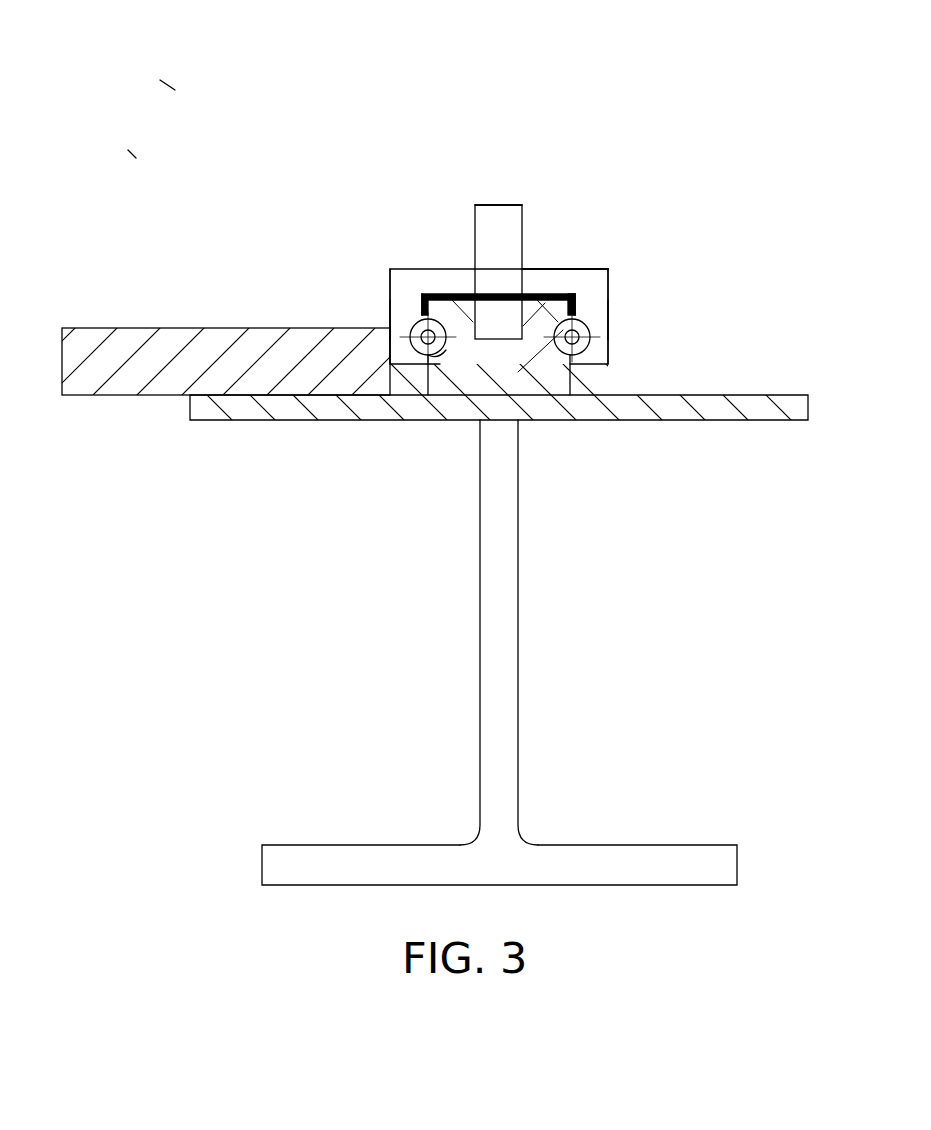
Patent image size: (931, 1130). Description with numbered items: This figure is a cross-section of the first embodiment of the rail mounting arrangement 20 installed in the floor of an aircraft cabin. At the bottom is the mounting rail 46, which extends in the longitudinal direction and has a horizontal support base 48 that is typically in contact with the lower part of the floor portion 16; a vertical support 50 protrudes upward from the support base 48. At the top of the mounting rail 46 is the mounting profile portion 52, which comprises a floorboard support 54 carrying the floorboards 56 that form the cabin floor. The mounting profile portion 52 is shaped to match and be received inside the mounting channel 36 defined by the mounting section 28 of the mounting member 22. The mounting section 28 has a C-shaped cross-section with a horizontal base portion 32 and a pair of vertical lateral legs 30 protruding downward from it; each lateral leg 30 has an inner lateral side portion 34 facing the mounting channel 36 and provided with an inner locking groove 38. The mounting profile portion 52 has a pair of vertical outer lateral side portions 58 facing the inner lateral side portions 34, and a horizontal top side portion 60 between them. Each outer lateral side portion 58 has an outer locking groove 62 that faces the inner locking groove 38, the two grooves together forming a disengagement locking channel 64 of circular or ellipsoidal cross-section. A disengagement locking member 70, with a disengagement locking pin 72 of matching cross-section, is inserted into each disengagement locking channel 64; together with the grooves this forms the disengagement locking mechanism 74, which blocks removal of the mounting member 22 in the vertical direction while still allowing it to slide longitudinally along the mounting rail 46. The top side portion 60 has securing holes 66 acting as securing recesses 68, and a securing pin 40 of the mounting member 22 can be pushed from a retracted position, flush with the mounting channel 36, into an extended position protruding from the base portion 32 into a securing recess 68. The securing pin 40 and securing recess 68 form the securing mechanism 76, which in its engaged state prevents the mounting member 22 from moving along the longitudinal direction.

The floor portion 16 is at (150, 65).
The rail mounting arrangement 20 is at (128, 123).
The mounting member 22 is at (391, 207).
The mounting section 28 is at (365, 240).
The lateral legs 30 is at (393, 317).
The base portion 32 is at (565, 277).
The inner lateral side portion 34 is at (430, 363).
The mounting channel 36 is at (448, 297).
The inner locking groove 38 is at (412, 333).
The securing pin 40 is at (500, 223).
The mounting rail 46 is at (499, 652).
The support base 48 is at (608, 863).
The vertical support 50 is at (498, 575).
The mounting profile portion 52 is at (494, 72).
The floorboard support 54 is at (233, 408).
The floorboards 56 is at (173, 337).
The outer lateral side portion 58 is at (426, 365).
The top side portion 60 is at (575, 293).
The outer locking groove 62 is at (450, 342).
The disengagement locking channel 64 is at (407, 347).
The securing holes 66 is at (553, 283).
The securing recesses 68 is at (553, 283).
The disengagement locking member 70 is at (418, 332).
The disengagement locking pin 72 is at (308, 222).
The disengagement locking mechanism 74 is at (662, 222).
The securing mechanism 76 is at (515, 148).